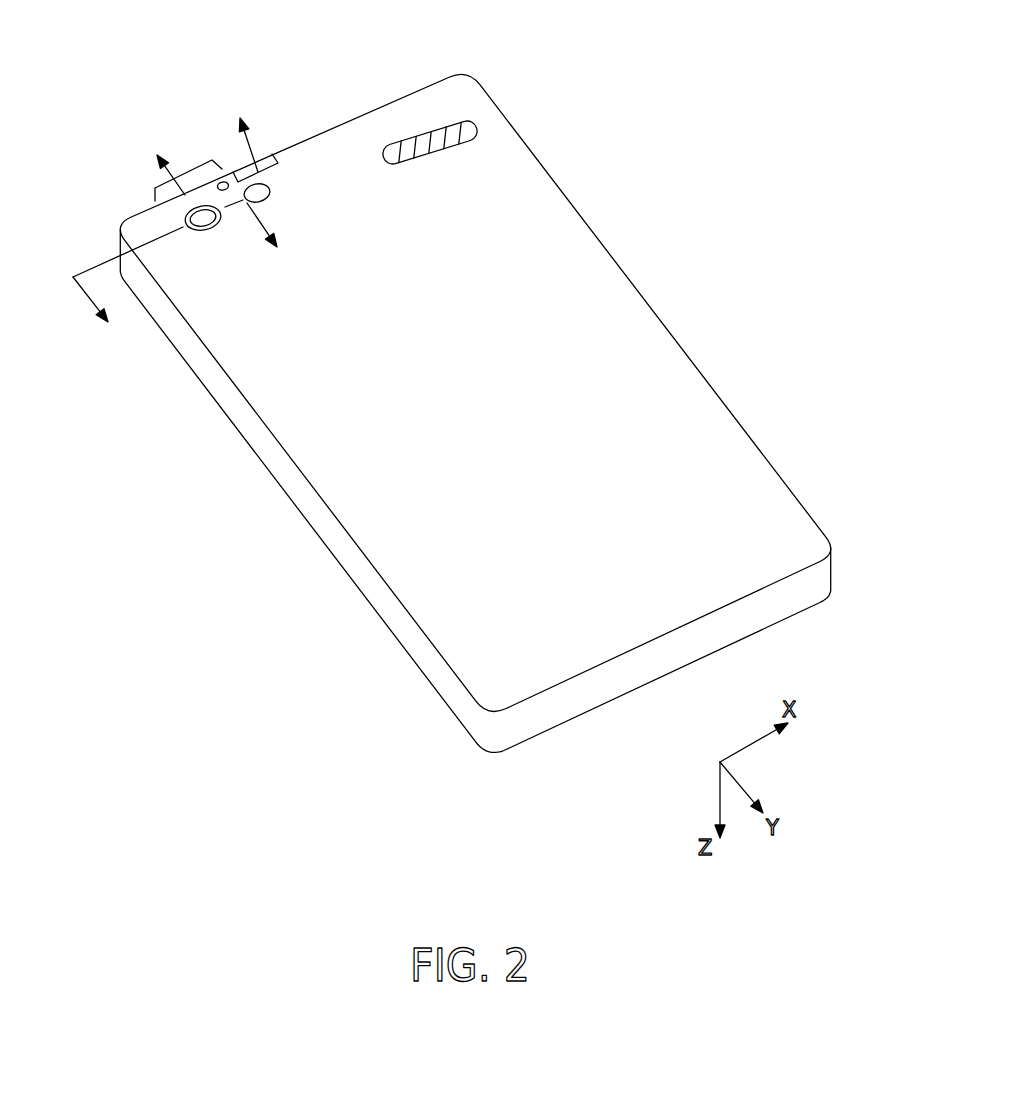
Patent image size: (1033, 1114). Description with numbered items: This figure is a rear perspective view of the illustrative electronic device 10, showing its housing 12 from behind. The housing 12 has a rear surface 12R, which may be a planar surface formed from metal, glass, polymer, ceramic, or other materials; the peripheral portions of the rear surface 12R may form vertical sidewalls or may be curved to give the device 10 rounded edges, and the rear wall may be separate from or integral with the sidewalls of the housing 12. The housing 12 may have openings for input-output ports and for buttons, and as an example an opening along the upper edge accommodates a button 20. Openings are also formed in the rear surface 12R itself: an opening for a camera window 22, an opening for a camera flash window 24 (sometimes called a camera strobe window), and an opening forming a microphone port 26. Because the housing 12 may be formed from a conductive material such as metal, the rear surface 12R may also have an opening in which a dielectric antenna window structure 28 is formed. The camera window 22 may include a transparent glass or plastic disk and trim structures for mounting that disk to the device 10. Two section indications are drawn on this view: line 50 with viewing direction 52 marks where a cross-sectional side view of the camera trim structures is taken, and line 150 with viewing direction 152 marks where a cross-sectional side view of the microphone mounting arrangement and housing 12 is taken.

The electronic device 10 is at (757, 53).
The housing 12 is at (337, 557).
The rear surface 12R is at (640, 340).
The button 20 is at (182, 170).
The camera window 22 is at (203, 238).
The camera flash window 24 is at (272, 205).
The microphone port 26 is at (216, 181).
The antenna window structure 28 is at (423, 163).
The line 50 is at (96, 266).
The direction 52 is at (85, 296).
The line 150 is at (252, 173).
The direction 152 is at (265, 142).